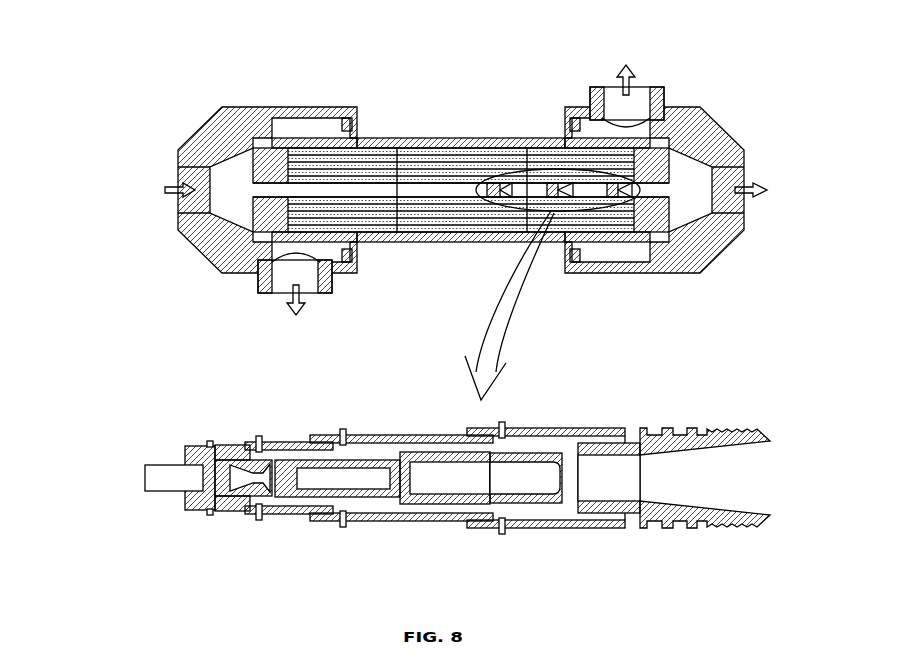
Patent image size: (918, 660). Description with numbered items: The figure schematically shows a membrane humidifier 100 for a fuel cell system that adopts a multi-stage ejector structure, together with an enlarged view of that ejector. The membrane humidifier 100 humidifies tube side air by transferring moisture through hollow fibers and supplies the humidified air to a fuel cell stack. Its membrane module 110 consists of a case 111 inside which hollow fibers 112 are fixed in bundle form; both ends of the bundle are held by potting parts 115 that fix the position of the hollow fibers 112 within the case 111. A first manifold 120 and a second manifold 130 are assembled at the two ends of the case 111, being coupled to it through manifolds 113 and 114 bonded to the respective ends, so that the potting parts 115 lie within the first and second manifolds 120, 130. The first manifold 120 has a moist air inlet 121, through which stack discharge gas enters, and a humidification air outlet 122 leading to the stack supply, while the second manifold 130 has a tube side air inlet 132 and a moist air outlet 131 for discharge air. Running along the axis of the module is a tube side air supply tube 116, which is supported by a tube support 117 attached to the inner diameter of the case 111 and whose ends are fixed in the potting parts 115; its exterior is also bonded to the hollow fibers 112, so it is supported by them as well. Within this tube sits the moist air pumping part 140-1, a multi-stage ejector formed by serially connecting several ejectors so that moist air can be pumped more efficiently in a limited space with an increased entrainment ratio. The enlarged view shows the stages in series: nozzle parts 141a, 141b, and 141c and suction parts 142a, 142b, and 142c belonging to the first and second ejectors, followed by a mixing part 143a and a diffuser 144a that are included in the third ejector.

The membrane humidifier 100 is at (268, 84).
The membrane module 110 is at (475, 124).
The case 111 is at (407, 137).
The hollow fibers 112 is at (416, 224).
The manifold 113 is at (627, 243).
The manifold 114 is at (346, 134).
The potting parts 115 is at (697, 271).
The tube side air supply tube 116 is at (441, 189).
The tube support 117 is at (526, 148).
The first manifold 120 is at (716, 148).
The moist air inlet 121 is at (666, 92).
The humidification air outlet 122 is at (737, 201).
The second manifold 130 is at (208, 127).
The moist air outlet 131 is at (258, 277).
The tube side air inlet 132 is at (183, 207).
The moist air pumping part 140-1 is at (562, 228).
The nozzle part 141a is at (233, 494).
The nozzle part 141b is at (369, 498).
The nozzle part 141c is at (523, 502).
The suction part 142a is at (304, 516).
The suction part 142b is at (418, 525).
The suction part 142c is at (567, 528).
The mixing part 143a is at (609, 488).
The diffuser 144a is at (718, 497).